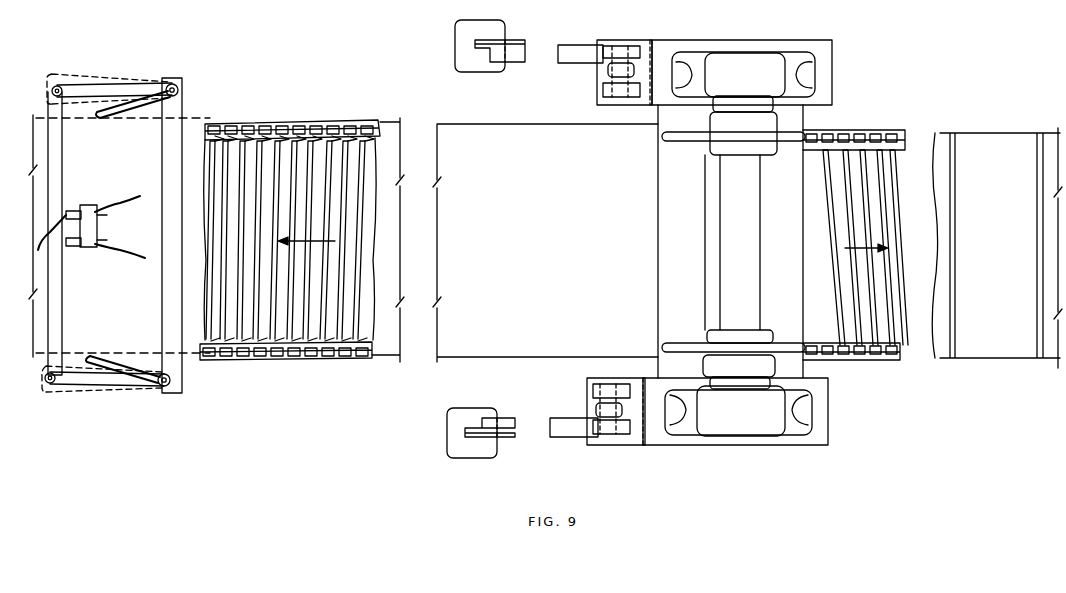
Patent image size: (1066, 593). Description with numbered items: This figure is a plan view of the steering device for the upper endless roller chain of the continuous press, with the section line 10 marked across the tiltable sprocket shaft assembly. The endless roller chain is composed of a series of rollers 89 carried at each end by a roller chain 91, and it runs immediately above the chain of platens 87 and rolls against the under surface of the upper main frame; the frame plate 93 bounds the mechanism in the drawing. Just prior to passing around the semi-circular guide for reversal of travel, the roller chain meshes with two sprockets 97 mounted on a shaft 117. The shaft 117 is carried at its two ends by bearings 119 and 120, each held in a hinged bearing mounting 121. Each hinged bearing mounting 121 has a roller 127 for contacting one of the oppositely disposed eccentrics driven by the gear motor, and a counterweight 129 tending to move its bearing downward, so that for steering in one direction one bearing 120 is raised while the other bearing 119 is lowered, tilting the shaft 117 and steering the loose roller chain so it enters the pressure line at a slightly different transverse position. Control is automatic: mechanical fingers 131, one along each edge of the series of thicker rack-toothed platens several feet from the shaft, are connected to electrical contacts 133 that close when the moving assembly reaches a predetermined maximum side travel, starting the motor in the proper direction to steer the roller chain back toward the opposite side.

The section line 10- 10 is at (595, 478).
The chain of platens 87 is at (986, 133).
The rollers 89 is at (365, 172).
The roller chain 91 is at (378, 122).
The frame plate 93 is at (75, 118).
The sprockets 97 is at (696, 343).
The shaft 117 is at (762, 230).
The bearing 119 is at (758, 60).
The bearing 120 is at (750, 437).
The hinged bearing mounting 121 is at (830, 415).
The roller 127 is at (606, 70).
The counterweight 129 is at (456, 42).
The mechanical fingers 131 is at (125, 112).
The electrical contacts 133 is at (98, 241).